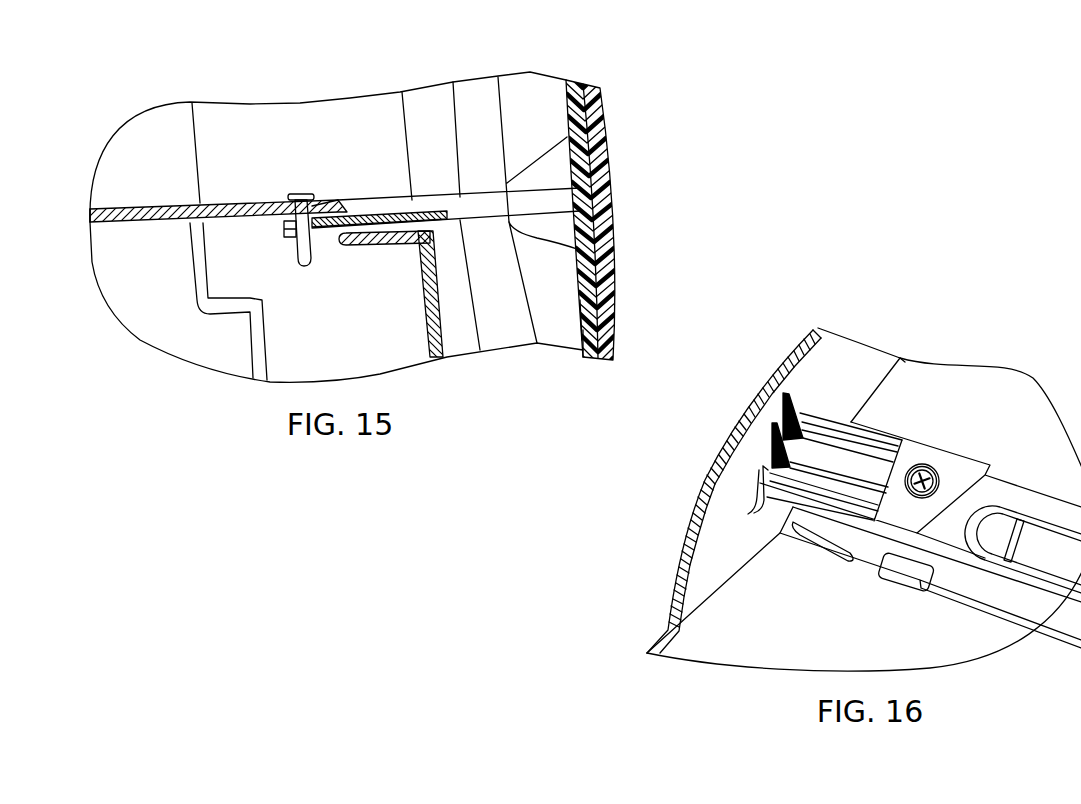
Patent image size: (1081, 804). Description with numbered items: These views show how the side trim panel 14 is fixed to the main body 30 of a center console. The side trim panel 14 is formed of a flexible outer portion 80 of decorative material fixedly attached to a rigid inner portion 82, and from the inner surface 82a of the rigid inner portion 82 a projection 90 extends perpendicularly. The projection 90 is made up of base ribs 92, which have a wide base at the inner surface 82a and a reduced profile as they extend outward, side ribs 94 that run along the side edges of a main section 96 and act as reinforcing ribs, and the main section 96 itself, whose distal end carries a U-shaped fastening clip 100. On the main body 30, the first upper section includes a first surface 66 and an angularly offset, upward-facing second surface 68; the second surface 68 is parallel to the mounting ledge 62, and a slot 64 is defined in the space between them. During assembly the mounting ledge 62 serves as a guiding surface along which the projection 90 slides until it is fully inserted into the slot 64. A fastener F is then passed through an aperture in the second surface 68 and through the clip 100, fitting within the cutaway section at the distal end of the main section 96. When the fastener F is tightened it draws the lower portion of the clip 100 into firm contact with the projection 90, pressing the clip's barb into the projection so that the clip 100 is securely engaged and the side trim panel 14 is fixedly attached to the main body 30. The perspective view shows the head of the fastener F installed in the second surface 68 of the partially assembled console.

In FIG. 15, the main body 30 is at (228, 102).
In FIG. 16, the main body 30 is at (1029, 380).
In FIG. 15, the side trim panel 14 is at (615, 162).
In FIG. 16, the side trim panel 14 is at (768, 387).
In FIG. 15, the flexible outer portion 80 is at (607, 242).
In FIG. 15, the second surface 68 is at (247, 205).
In FIG. 16, the second surface 68 is at (975, 475).
In FIG. 15, the fastener F is at (300, 194).
In FIG. 16, the fastener F is at (931, 470).
In FIG. 15, the side ribs 94 is at (356, 212).
In FIG. 16, the side ribs 94 is at (837, 428).
In FIG. 15, the main section 96 is at (377, 217).
In FIG. 15, the projection 90 is at (536, 203).
In FIG. 16, the projection 90 is at (806, 455).
In FIG. 15, the fastening clip 100 is at (283, 228).
In FIG. 15, the slot 64 is at (347, 246).
In FIG. 15, the mounting ledge 62 is at (407, 233).
In FIG. 15, the rigid inner portion 82 is at (592, 282).
In FIG. 16, the rigid inner portion 82 is at (838, 368).
In FIG. 15, the inner surface 82a is at (581, 317).
In FIG. 16, the inner surface 82a is at (722, 555).
In FIG. 16, the first surface 66 is at (944, 391).
In FIG. 16, the base ribs 92 is at (878, 457).